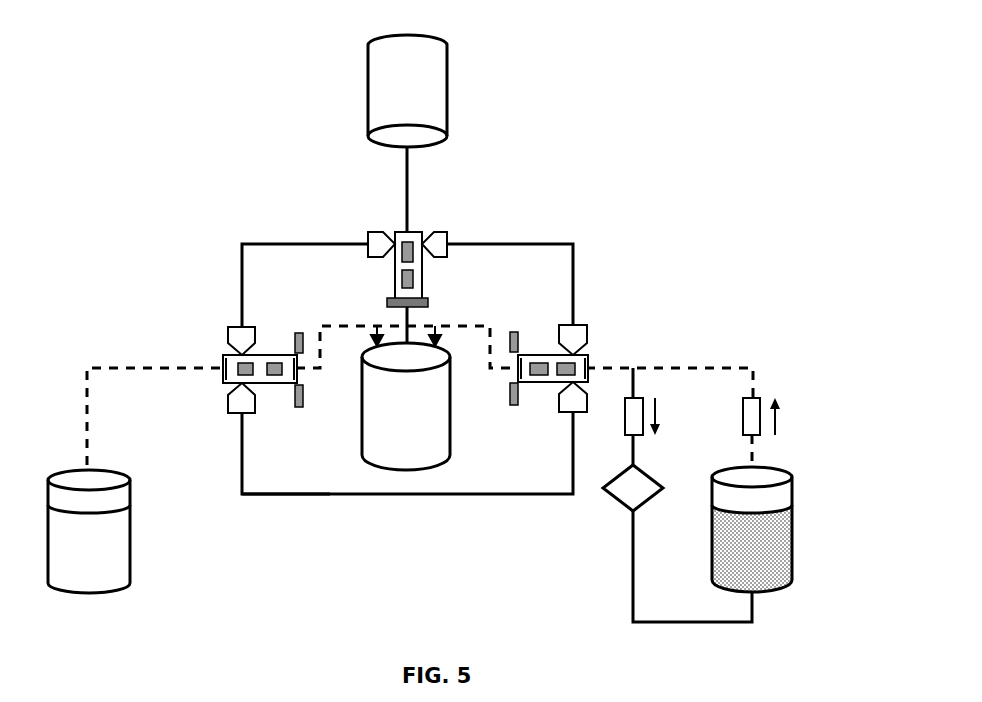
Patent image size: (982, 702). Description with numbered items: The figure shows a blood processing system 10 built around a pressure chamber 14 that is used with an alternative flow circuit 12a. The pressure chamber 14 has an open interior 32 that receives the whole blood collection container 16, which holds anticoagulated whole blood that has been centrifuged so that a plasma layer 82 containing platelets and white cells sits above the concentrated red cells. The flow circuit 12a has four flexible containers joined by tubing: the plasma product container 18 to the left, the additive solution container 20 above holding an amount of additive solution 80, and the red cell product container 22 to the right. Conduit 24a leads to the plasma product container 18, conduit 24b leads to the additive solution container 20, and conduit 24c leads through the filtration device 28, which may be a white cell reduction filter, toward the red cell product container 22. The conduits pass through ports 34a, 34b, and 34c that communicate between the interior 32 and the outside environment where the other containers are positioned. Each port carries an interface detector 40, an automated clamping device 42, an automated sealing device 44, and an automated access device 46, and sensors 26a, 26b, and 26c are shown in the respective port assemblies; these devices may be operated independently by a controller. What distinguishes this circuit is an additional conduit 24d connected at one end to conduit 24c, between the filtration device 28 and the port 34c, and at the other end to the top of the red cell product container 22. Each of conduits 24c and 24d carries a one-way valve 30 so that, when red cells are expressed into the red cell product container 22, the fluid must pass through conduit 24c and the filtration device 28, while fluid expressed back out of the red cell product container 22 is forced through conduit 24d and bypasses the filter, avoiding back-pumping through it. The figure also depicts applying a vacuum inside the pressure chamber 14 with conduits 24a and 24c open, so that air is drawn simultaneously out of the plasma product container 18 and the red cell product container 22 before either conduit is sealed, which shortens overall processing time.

The fluid processing system 10 is at (662, 162).
The alternative flow circuit 12a is at (455, 98).
The pressure chamber 14 is at (347, 500).
The whole blood collection container 16 is at (425, 470).
The plasma product container 18 is at (130, 540).
The additive solution container 20 is at (368, 88).
The red cell product container 22 is at (793, 540).
The conduit 24a is at (137, 365).
The conduit 24b is at (410, 188).
The conduit 24c is at (632, 570).
The additional conduit 24d is at (695, 366).
The sensor 26a is at (270, 363).
The sensor 26b is at (413, 280).
The sensor 26c is at (540, 377).
The filtration device 28 is at (620, 500).
The one-way valve 30 is at (745, 436).
The open interior 32 is at (272, 484).
The port 34a is at (273, 388).
The port 34b is at (454, 235).
The port 34c is at (582, 322).
The interface detector 40 is at (440, 236).
The automated clamping device 42 is at (385, 303).
The automated sealing device 44 is at (400, 233).
The automated access device 46 is at (372, 240).
The additive solution 80 is at (775, 568).
The plasma layer 82 is at (97, 568).